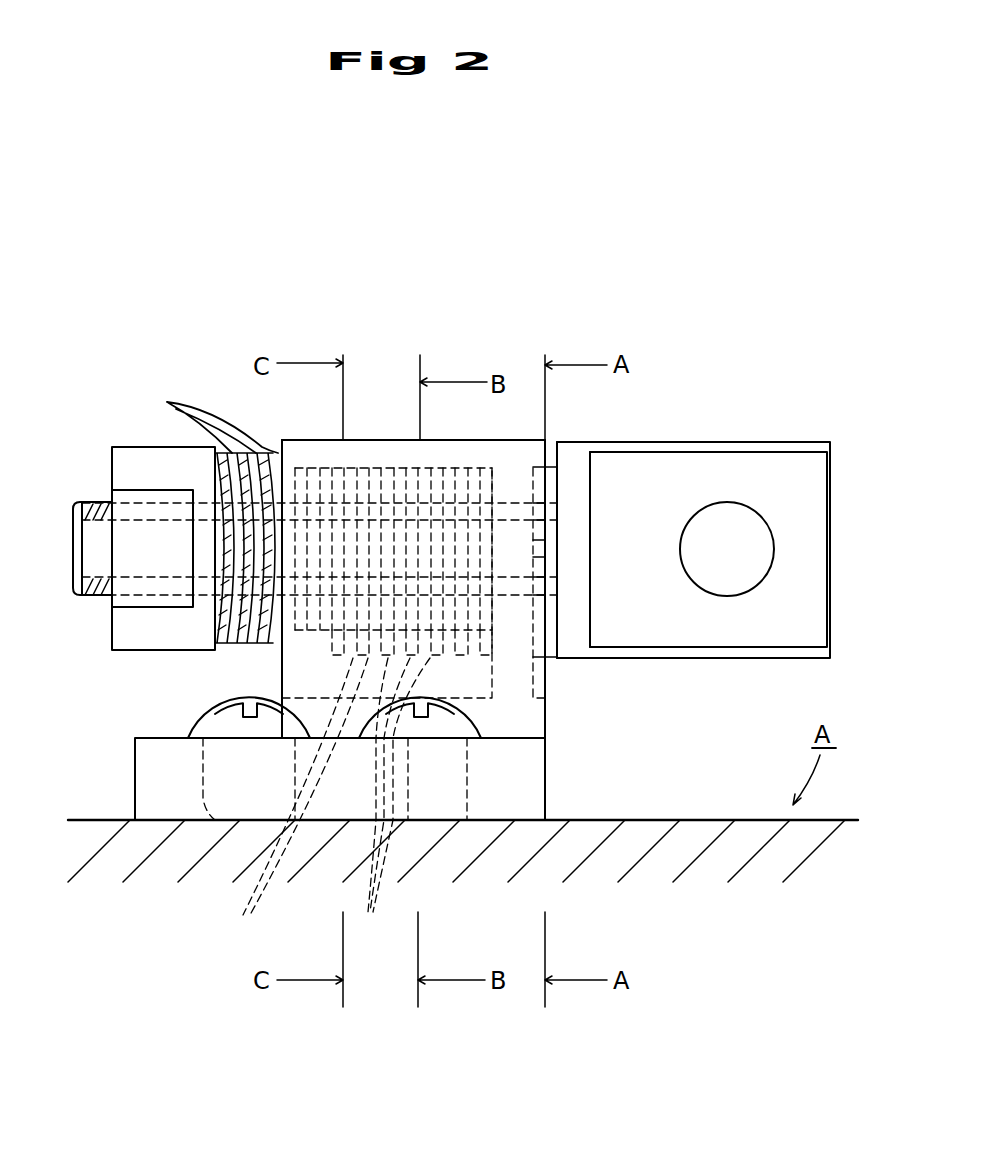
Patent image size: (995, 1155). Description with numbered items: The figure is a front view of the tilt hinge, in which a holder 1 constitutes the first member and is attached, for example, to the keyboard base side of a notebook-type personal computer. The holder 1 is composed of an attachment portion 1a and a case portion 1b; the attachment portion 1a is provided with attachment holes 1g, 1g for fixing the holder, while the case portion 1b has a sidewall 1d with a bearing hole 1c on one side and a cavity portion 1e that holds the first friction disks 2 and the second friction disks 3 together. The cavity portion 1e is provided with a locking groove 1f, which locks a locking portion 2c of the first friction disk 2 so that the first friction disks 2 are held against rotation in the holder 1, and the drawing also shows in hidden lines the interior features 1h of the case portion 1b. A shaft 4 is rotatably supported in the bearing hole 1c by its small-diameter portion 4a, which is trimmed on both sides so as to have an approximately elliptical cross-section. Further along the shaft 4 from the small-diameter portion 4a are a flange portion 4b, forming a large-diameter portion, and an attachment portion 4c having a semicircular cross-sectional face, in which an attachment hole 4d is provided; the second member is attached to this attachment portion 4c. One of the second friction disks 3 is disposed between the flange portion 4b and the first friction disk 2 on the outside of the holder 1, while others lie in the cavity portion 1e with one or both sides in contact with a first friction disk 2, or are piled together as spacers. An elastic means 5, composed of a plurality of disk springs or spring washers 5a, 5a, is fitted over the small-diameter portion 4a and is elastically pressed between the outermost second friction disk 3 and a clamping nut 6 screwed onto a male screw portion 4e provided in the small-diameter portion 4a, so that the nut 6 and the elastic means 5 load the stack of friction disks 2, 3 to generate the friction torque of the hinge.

The holder 1 is at (368, 412).
The attachment portion 1a is at (167, 755).
The case portion 1b is at (452, 440).
The bearing hole 1c is at (558, 497).
The sidewall 1d is at (507, 693).
The cavity portion 1e is at (320, 466).
The locking groove 1f is at (305, 695).
The attachment holes 1g is at (216, 822).
The terminal insertion hole 1h is at (553, 538).
The first friction disk 2 is at (406, 465).
The locking portion 2c is at (392, 806).
The second friction disk 3 is at (312, 633).
The shaft 4 is at (745, 402).
The small-diameter portion 4a is at (90, 553).
The flange portion 4b is at (577, 507).
The attachment portion 4c is at (795, 495).
The attachment hole 4d is at (770, 547).
The male screw portion 4e is at (95, 510).
The elastic means 5 is at (234, 406).
The disk springs or spring washers 5a is at (209, 410).
The clamping nut 6 is at (135, 462).